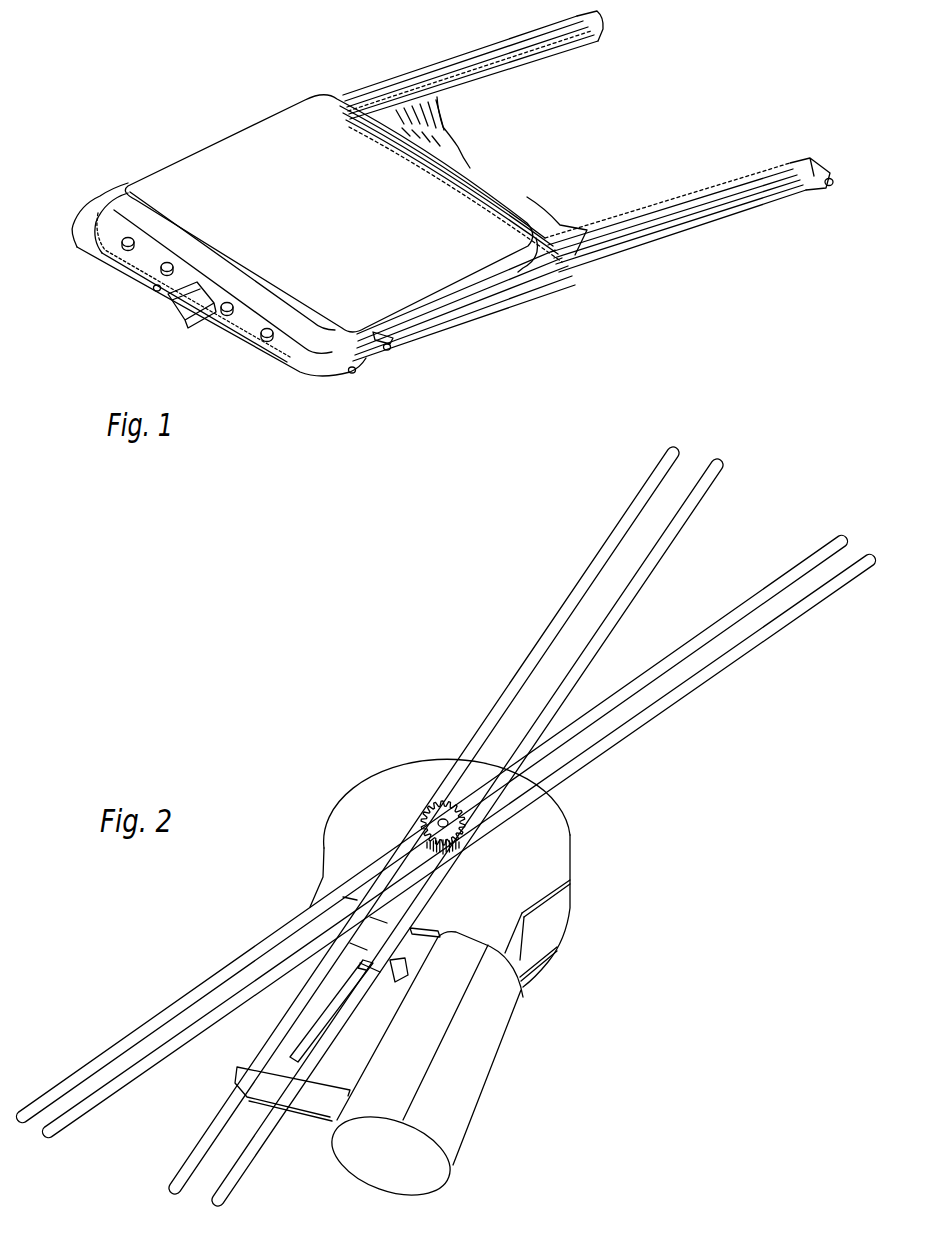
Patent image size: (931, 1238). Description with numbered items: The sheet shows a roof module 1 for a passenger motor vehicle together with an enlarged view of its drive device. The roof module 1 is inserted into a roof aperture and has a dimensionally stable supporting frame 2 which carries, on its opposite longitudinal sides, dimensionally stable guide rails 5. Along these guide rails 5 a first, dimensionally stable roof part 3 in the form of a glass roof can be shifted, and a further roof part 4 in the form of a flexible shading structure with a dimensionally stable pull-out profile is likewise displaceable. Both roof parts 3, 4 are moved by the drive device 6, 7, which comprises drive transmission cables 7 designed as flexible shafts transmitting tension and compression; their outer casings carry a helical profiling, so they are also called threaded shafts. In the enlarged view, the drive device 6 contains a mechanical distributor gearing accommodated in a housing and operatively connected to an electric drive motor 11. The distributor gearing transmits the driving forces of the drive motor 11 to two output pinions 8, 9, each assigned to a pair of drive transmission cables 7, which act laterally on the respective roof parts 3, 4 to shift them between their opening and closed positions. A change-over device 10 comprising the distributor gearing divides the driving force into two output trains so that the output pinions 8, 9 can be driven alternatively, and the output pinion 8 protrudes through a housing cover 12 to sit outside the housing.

In FIG. 1, the roof module 1 is at (230, 96).
In FIG. 1, the supporting frame 2 is at (135, 278).
In FIG. 1, the first roof part 3 is at (203, 170).
In FIG. 1, the further roof part 4 is at (440, 117).
In FIG. 1, the guide rails 5 is at (397, 80).
In FIG. 1, the drive device 6 is at (193, 348).
In FIG. 2, the drive device 6 is at (350, 758).
In FIG. 1, the drive transmission cables 7 is at (260, 345).
In FIG. 2, the drive transmission cables 7 is at (620, 700).
In FIG. 2, the output pinion 8 is at (440, 812).
In FIG. 2, the output pinion 9 is at (387, 853).
In FIG. 2, the change-over device 10 is at (580, 876).
In FIG. 2, the electric drive motor 11 is at (487, 1062).
In FIG. 2, the housing cover 12 is at (332, 1057).